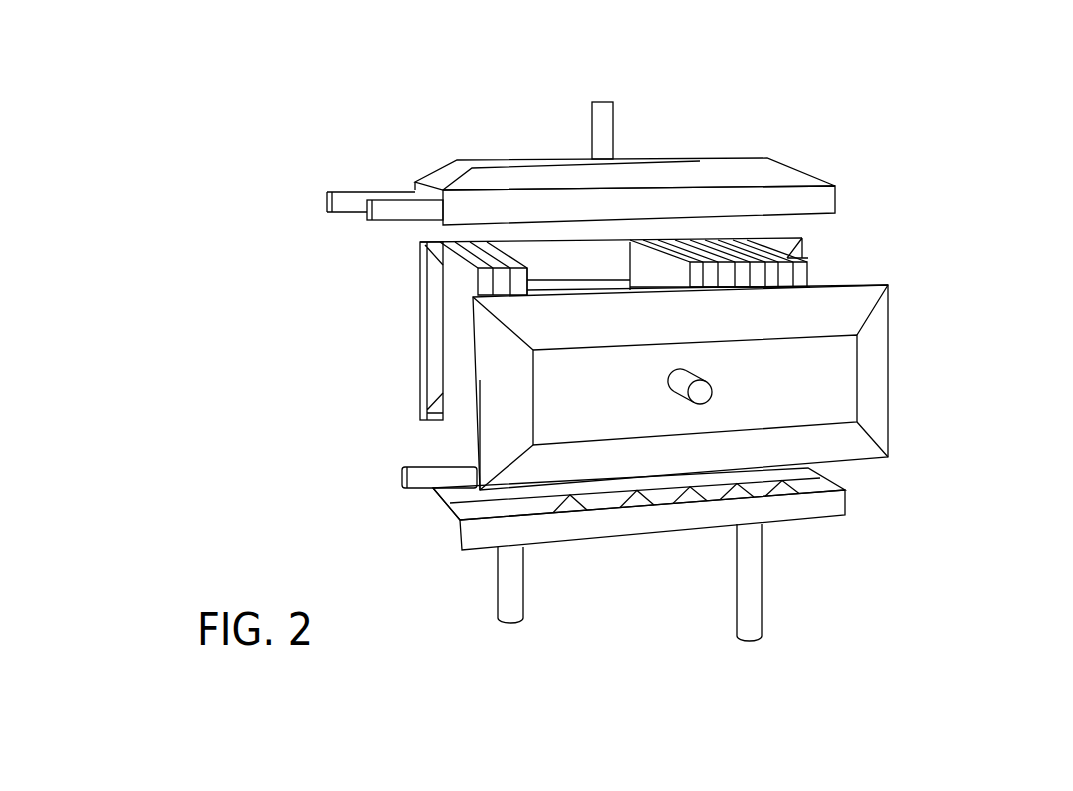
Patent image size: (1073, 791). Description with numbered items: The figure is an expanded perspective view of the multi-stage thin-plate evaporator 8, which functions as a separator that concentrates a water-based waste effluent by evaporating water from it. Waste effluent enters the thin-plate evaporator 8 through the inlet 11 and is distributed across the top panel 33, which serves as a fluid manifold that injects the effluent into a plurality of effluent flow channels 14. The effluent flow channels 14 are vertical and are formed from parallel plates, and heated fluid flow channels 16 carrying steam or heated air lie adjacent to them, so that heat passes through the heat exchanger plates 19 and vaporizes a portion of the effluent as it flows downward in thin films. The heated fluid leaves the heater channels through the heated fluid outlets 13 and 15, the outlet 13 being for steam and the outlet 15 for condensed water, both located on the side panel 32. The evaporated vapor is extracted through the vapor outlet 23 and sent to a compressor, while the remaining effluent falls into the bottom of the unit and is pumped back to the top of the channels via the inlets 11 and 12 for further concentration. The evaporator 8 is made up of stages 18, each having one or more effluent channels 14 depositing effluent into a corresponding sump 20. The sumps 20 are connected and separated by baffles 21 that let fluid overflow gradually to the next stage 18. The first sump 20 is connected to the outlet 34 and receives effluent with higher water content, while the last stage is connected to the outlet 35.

The thin-plate evaporator 8 is at (977, 158).
The inlet 11 is at (327, 198).
The inlet 12 is at (368, 213).
The heated fluid outlet 13 is at (705, 393).
The effluent flow channels 14 is at (797, 235).
The heated fluid outlet 15 is at (402, 472).
The heated fluid flow channels 16 is at (783, 271).
The stages 18 is at (453, 330).
The heat exchanger plates 19 is at (460, 258).
The sump 20 is at (487, 533).
The baffles 21 is at (643, 498).
The vapor outlet 23 is at (613, 106).
The side panel 32 is at (873, 402).
The top panel 33 is at (773, 165).
The outlet 34 is at (510, 622).
The outlet 35 is at (750, 640).